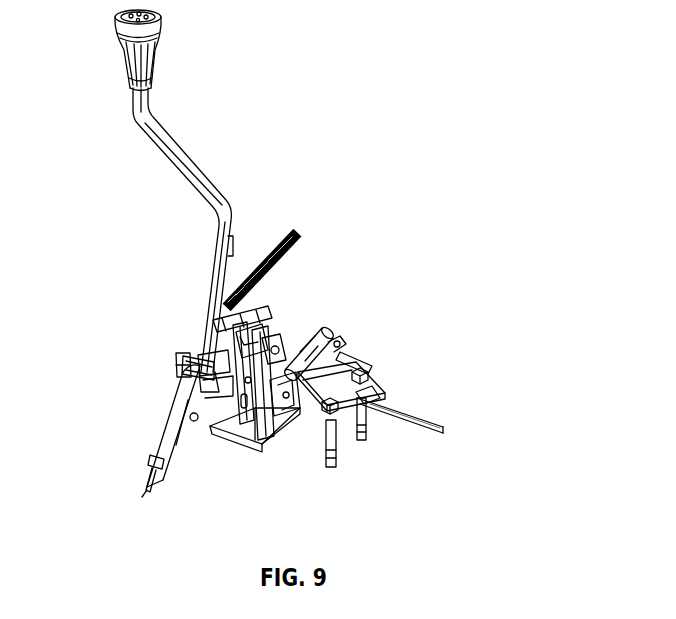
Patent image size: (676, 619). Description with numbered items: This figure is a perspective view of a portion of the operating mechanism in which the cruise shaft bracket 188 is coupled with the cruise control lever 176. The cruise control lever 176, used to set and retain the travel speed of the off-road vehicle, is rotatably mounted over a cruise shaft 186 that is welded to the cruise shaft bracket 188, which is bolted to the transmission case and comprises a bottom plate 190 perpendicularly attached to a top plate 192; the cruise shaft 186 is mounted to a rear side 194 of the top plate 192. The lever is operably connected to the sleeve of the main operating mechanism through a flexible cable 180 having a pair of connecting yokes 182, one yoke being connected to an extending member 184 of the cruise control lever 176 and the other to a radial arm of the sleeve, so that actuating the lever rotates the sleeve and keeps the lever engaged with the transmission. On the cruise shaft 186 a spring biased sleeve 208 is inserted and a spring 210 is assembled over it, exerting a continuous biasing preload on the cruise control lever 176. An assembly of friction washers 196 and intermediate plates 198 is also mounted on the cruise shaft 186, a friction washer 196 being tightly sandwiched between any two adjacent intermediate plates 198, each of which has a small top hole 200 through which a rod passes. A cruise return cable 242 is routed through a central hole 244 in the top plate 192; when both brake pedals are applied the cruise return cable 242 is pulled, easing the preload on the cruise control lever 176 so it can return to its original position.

The cruise control lever 176 is at (153, 130).
The flexible cable 180 is at (150, 480).
The connecting yokes 182 is at (163, 443).
The extending member 184 is at (190, 397).
The cruise shaft 186 is at (213, 370).
The cruise shaft bracket 188 is at (318, 350).
The bottom plate 190 is at (253, 445).
The top plate 192 is at (328, 348).
The rear side 194 is at (290, 410).
The friction washers 196 is at (217, 373).
The intermediate plates 198 is at (263, 340).
The small top hole 200 is at (262, 342).
The spring biased sleeve 208 is at (330, 398).
The spring 210 is at (338, 349).
The cruise return cable 242 is at (422, 426).
The central hole 244 is at (300, 375).